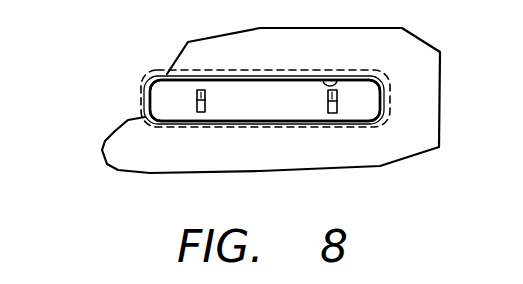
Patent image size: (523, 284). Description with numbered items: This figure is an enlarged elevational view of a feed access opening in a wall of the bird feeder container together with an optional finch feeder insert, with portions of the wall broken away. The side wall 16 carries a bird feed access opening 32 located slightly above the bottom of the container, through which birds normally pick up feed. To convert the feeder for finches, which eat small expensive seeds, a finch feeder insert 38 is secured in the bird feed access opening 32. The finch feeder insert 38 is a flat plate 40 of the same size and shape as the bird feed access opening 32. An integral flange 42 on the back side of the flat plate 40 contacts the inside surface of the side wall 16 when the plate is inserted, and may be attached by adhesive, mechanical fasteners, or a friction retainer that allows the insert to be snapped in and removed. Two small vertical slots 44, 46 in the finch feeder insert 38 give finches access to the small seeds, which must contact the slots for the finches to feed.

The side wall 16 is at (352, 161).
The bird feed access opening 32 is at (338, 78).
The finch feeder insert 38 is at (118, 97).
The flat plate 40 is at (370, 97).
The integral flange 42 is at (157, 75).
The small vertical slot 44 is at (195, 106).
The small vertical slot 46 is at (332, 113).